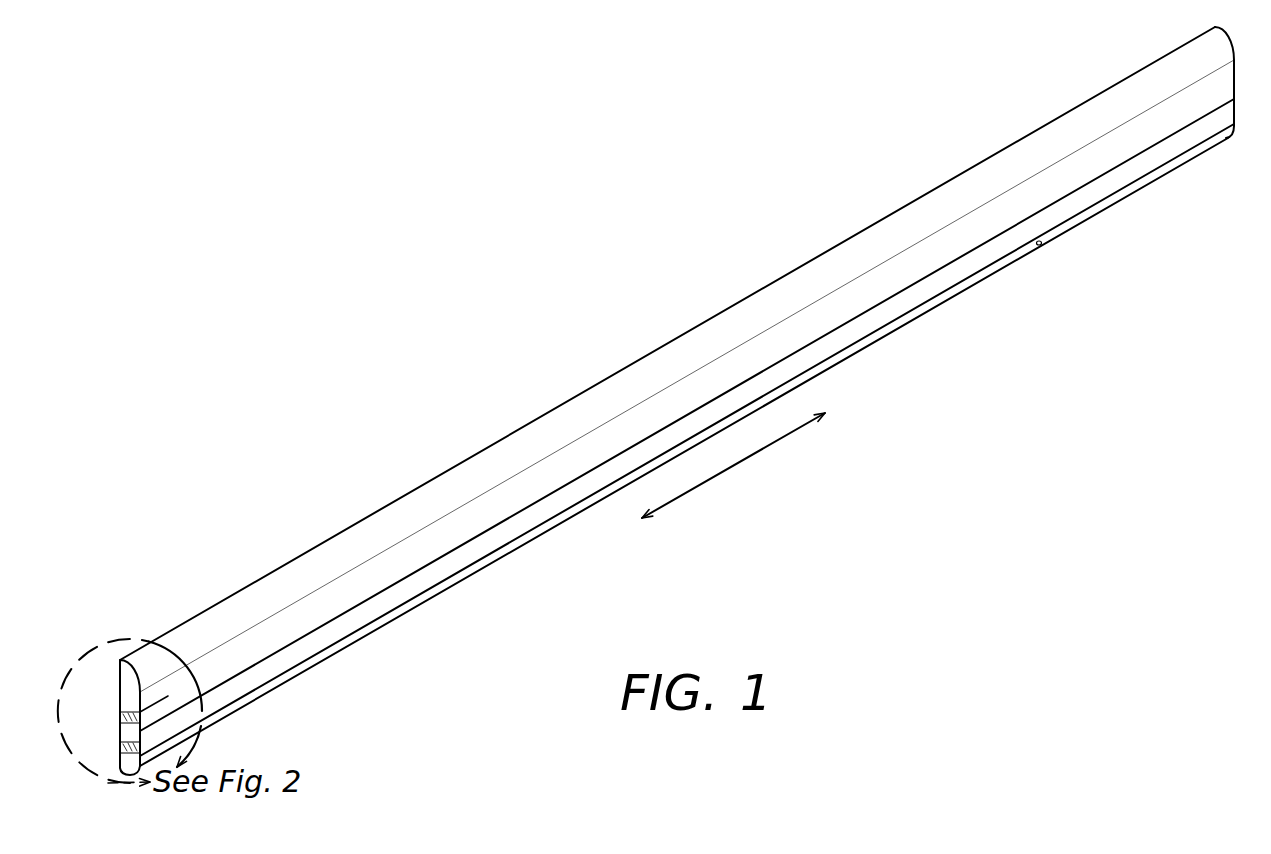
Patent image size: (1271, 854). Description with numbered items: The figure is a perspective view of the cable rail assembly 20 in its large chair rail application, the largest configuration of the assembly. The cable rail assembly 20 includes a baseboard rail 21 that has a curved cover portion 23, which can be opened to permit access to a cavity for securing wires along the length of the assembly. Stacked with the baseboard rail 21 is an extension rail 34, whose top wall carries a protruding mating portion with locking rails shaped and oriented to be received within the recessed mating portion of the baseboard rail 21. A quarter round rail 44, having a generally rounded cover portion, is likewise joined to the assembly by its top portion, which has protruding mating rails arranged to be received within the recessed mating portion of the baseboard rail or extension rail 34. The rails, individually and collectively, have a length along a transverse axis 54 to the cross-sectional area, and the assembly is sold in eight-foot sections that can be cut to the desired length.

The cable rail assembly 20 is at (497, 392).
The baseboard rail 21 is at (937, 253).
The curved cover portion 23 is at (990, 191).
The extension rail 34 is at (1122, 187).
The quarter round rail 44 is at (1042, 244).
The transverse axis 54 is at (757, 455).